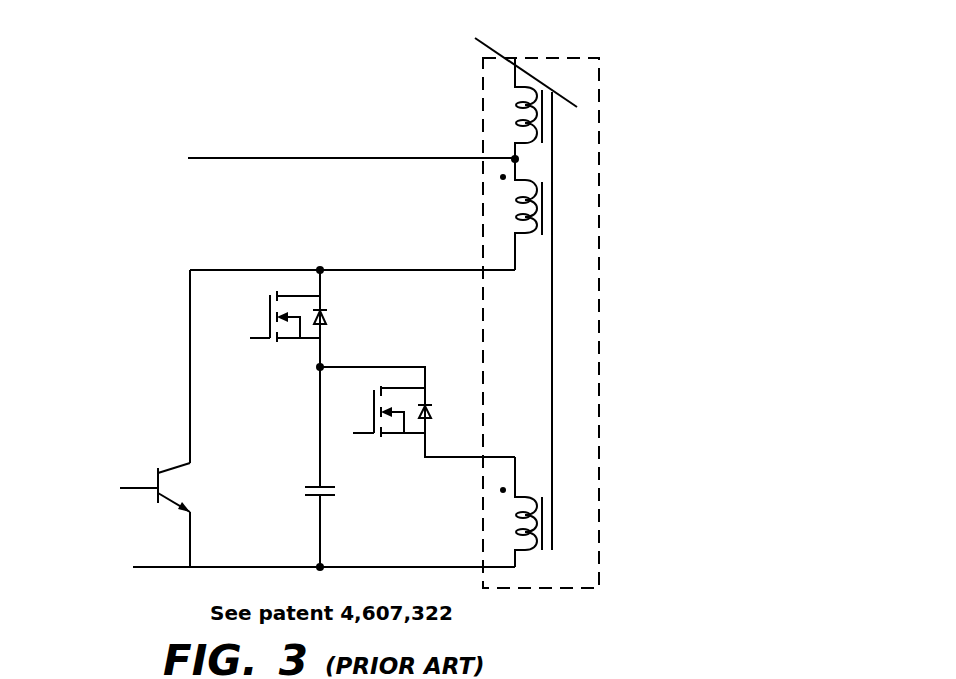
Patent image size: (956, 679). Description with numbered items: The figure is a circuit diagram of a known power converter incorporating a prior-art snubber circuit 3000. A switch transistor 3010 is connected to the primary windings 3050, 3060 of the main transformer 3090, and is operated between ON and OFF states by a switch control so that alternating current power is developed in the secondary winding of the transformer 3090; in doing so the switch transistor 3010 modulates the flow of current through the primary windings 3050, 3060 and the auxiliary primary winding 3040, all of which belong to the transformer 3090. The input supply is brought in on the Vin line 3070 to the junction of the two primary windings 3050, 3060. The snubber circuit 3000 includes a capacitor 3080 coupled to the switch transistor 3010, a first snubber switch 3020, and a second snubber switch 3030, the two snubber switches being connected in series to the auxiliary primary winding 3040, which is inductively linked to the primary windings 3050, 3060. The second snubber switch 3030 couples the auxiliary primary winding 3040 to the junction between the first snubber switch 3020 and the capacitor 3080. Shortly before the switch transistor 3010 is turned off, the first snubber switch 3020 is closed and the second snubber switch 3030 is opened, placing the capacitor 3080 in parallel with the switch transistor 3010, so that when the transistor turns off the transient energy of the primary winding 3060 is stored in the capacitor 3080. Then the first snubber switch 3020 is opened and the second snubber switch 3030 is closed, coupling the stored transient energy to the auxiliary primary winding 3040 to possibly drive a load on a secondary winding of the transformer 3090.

The snubber circuit 3000 is at (676, 61).
The switch transistor 3010 is at (155, 495).
The first snubber switch 3020 is at (267, 338).
The second snubber switch 3030 is at (370, 432).
The auxiliary primary winding 3040 is at (535, 522).
The primary winding 3050 is at (518, 106).
The primary winding 3060 is at (518, 200).
The input voltage line Vin 3070 is at (238, 157).
The capacitor 3080 is at (313, 497).
The main transformer 3090 is at (599, 103).